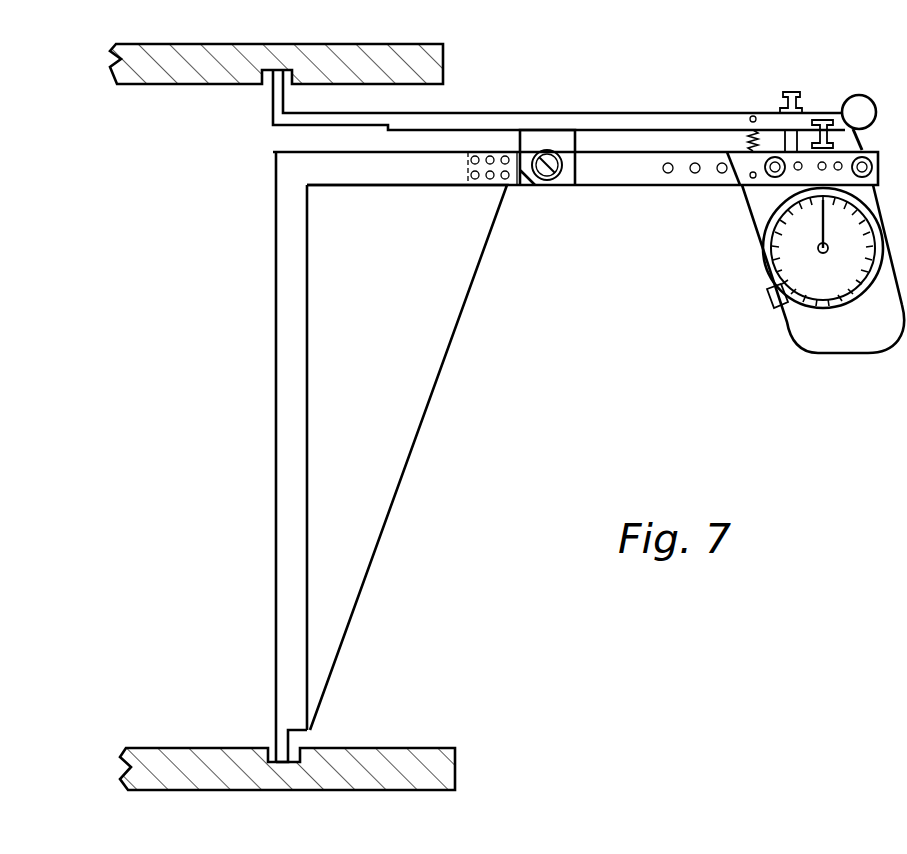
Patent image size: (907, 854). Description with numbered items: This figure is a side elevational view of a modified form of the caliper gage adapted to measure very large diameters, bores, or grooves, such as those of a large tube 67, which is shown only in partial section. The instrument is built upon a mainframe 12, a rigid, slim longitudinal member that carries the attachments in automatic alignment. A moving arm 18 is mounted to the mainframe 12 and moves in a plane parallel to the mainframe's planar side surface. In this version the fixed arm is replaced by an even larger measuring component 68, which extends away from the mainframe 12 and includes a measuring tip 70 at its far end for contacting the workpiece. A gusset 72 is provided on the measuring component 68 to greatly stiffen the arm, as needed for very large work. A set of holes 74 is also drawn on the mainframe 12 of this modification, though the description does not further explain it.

The mainframe 12 is at (598, 146).
The moving arm 18 is at (674, 118).
The large tube 67 is at (160, 88).
The measuring component 68 is at (271, 449).
The measuring tip 70 is at (277, 745).
The gusset 72 is at (454, 343).
The holes 74 is at (474, 156).